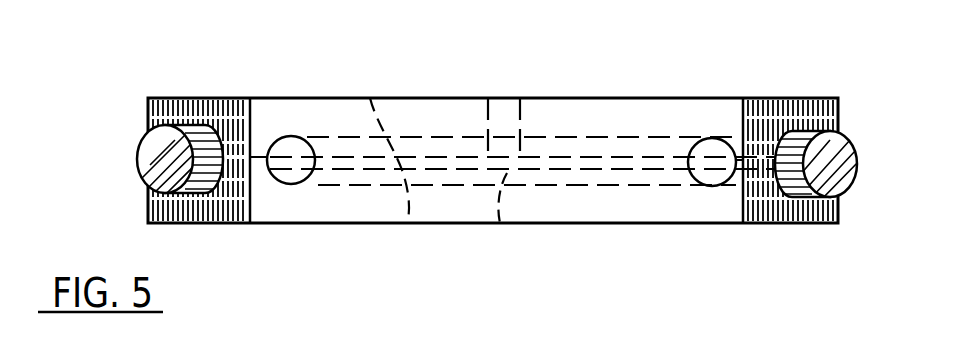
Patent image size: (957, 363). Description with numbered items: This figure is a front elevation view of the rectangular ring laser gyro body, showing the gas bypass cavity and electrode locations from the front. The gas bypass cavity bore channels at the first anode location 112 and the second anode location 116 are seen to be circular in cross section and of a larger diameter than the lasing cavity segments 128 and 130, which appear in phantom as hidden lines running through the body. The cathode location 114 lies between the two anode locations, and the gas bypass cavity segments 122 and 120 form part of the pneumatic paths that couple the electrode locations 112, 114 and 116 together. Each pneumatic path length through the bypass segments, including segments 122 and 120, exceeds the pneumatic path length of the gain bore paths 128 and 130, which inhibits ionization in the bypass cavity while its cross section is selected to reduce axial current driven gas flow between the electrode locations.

The anode 1 location 112 is at (300, 172).
The cathode location 114 is at (500, 223).
The anode 2 location 116 is at (710, 177).
The gas bypass cavity segment 120 is at (601, 138).
The gas bypass cavity segment 122 is at (370, 98).
The gain bore path 128 is at (407, 223).
The gain bore path 130 is at (605, 163).